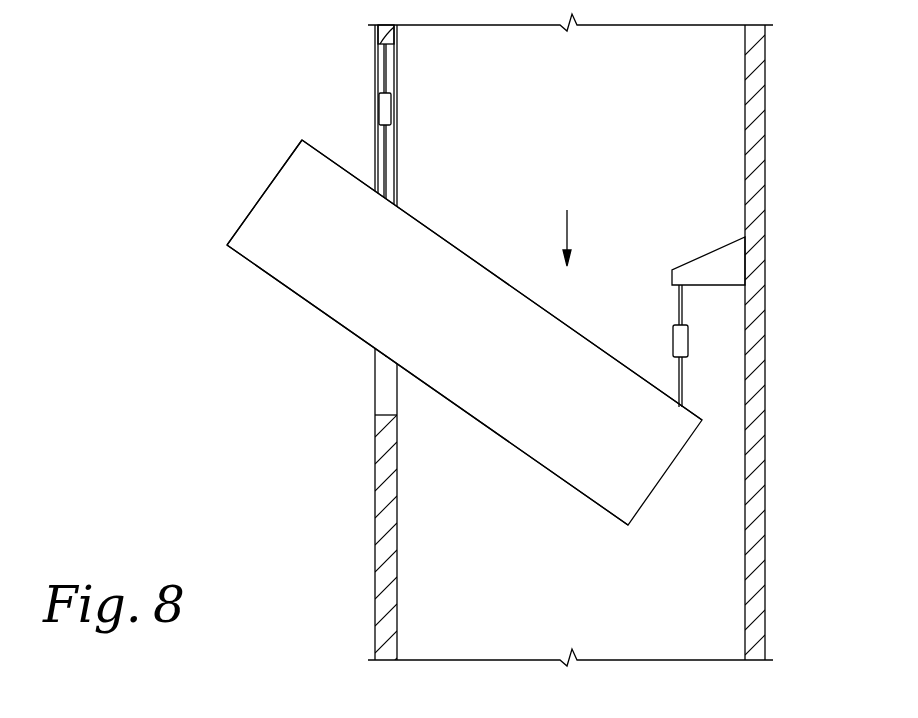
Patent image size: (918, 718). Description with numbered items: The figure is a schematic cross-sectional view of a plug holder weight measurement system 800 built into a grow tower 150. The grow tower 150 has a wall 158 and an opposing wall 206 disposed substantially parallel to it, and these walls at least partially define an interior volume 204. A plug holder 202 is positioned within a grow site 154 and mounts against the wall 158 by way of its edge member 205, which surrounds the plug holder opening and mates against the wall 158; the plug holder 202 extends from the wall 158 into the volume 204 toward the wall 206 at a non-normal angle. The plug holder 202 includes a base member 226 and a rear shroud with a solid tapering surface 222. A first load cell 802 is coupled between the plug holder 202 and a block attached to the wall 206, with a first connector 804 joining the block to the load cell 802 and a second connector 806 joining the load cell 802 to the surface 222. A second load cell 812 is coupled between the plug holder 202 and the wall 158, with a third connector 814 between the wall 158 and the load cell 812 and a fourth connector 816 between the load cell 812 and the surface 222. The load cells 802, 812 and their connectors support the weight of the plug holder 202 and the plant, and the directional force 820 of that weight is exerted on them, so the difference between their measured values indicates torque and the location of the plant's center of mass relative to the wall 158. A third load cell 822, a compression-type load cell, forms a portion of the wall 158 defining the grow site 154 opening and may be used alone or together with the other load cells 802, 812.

The grow tower 150 is at (791, 218).
The grow site 154 is at (267, 301).
The wall 158 is at (375, 583).
The plug holder 202 is at (487, 348).
The interior volume 204 is at (550, 107).
The edge member 205 is at (268, 187).
The wall 206 is at (744, 93).
The surface 222 is at (447, 240).
The base member 226 is at (593, 502).
The plug holder weight measurement system 800 is at (186, 502).
The first load cell 802 is at (673, 334).
The first connector 804 is at (677, 296).
The second connector 806 is at (683, 388).
The second load cell 812 is at (388, 110).
The third connector 814 is at (388, 74).
The fourth connector 816 is at (390, 173).
The directional force 820 is at (567, 224).
The third load cell 822 is at (387, 375).